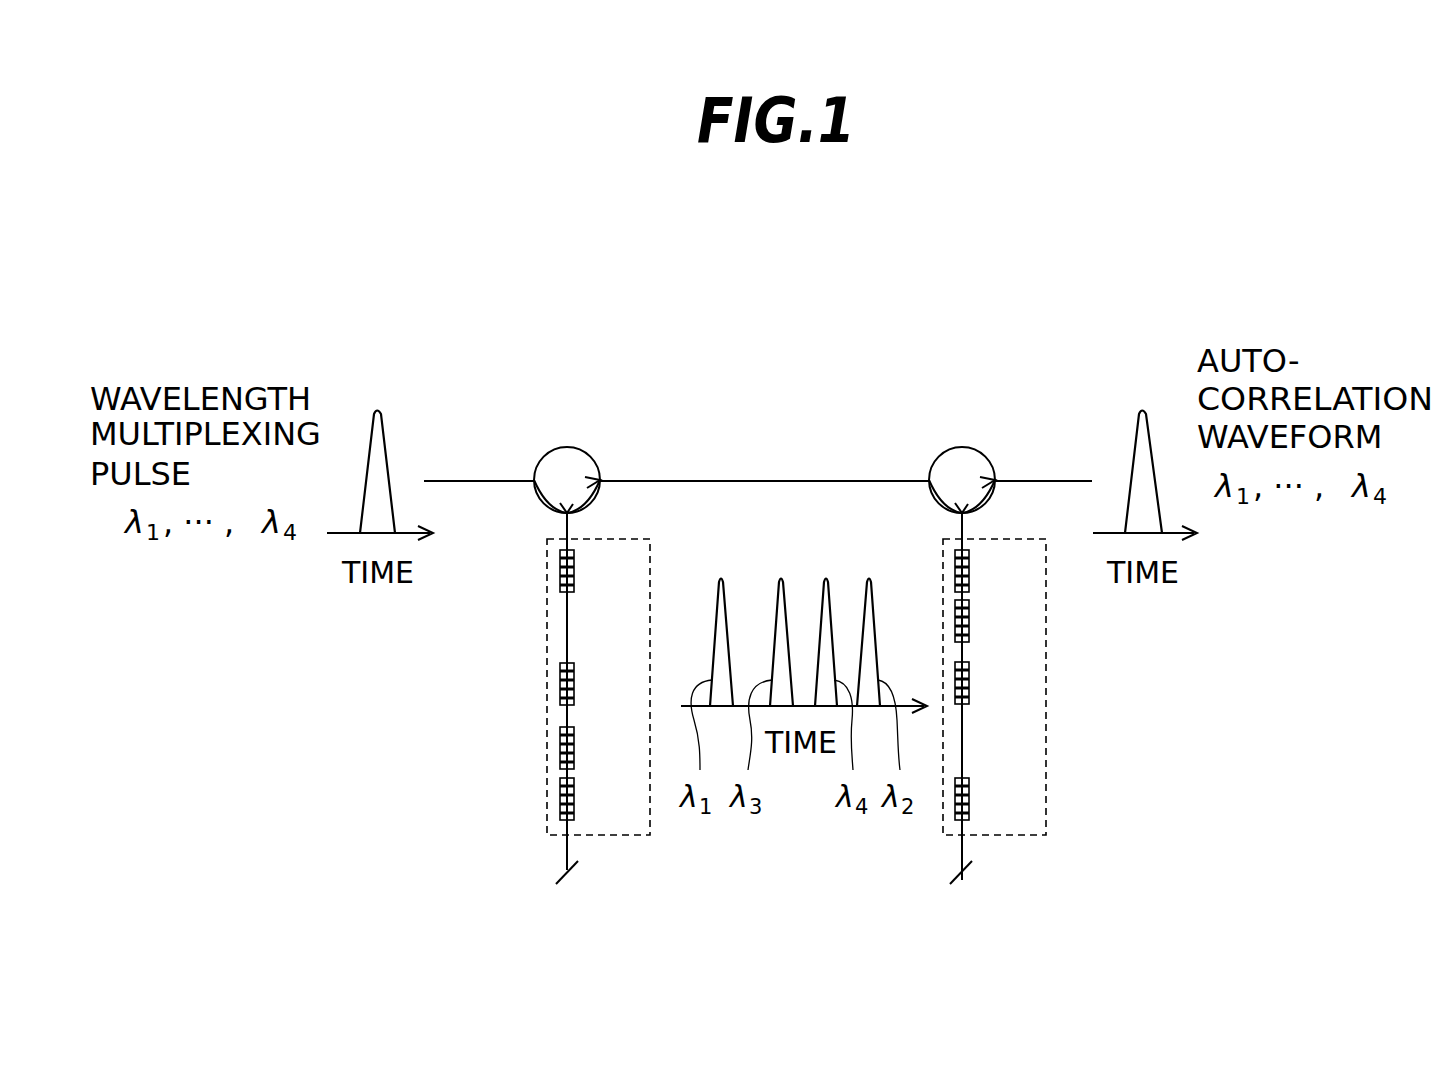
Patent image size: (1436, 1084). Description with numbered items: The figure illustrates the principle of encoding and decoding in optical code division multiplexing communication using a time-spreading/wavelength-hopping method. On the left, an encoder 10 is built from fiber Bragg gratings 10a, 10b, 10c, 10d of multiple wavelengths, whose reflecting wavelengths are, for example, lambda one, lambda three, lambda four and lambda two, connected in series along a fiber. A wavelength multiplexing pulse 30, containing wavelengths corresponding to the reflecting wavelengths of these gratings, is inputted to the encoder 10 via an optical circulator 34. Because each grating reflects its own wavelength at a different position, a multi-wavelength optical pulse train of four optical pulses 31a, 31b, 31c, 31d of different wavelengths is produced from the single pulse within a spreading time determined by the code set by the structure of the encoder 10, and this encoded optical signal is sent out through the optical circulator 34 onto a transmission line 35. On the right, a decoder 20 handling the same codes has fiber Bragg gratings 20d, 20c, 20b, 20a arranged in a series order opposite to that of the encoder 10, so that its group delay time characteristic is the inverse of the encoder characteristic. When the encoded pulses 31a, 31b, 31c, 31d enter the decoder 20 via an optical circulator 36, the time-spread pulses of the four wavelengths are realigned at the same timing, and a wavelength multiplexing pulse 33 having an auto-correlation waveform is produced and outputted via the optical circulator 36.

The encoder 10 is at (550, 698).
The fiber Bragg grating 10a is at (559, 571).
The fiber Bragg grating 10b is at (559, 685).
The fiber Bragg grating 10c is at (559, 748).
The fiber Bragg grating 10d is at (559, 800).
The decoder 20 is at (1043, 715).
The fiber Bragg grating 20a is at (969, 798).
The fiber Bragg grating 20b is at (969, 683).
The fiber Bragg grating 20c is at (969, 620).
The fiber Bragg grating 20d is at (969, 571).
The wavelength multiplexing pulse 30 is at (383, 415).
The optical pulse 31a is at (713, 613).
The optical pulse 31b is at (775, 613).
The optical pulse 31c is at (818, 613).
The optical pulse 31d is at (878, 613).
The wavelength multiplexing pulse of auto-correlation waveform 33 is at (1139, 415).
The optical circulator 34 is at (577, 448).
The transmission line 35 is at (780, 481).
The optical circulator 36 is at (972, 448).